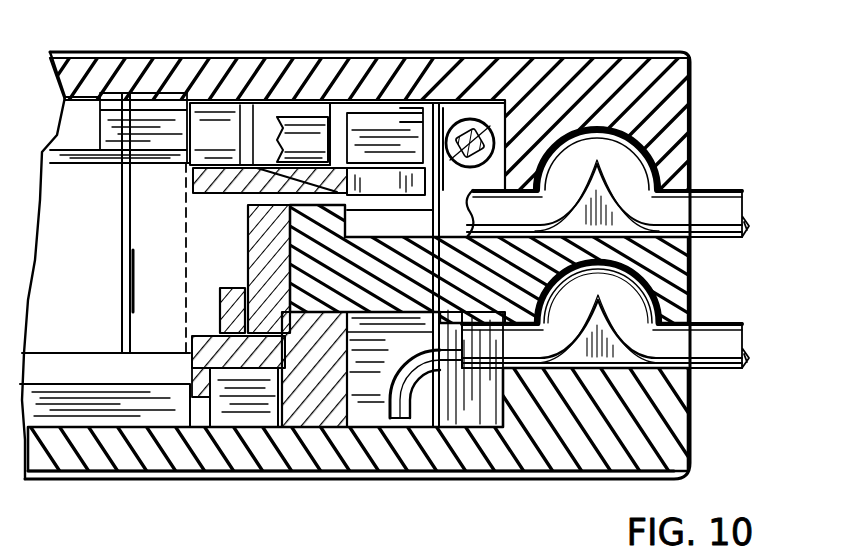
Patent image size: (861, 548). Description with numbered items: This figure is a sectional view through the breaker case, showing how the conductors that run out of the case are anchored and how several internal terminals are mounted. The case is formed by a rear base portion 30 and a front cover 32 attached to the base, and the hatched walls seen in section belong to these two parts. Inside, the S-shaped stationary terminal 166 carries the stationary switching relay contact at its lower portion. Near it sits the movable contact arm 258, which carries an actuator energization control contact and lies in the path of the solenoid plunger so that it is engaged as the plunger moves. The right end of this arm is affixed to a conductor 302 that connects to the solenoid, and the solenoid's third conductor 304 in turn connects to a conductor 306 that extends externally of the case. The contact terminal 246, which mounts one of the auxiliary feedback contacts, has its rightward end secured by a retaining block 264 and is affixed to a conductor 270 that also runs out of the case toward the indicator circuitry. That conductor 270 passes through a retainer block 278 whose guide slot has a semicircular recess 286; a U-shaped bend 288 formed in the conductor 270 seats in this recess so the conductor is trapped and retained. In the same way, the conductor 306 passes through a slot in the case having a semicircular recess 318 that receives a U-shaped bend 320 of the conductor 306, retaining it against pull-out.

The rear base portion 30 is at (345, 62).
The front cover 32 is at (463, 471).
The stationary terminal 166 is at (253, 241).
The contact terminal 246 is at (372, 413).
The movable contact arm 258 is at (345, 172).
The retaining block 264 is at (310, 414).
The conductor 270 is at (722, 368).
The retainer block 278 is at (694, 251).
The semicircular recess 286 is at (657, 303).
The U-shaped bend 288 is at (656, 283).
The conductor 302 is at (347, 127).
The third conductor 304 is at (475, 120).
The conductor 306 is at (740, 196).
The semicircular recess 318 is at (655, 152).
The U-shaped bend 320 is at (597, 128).